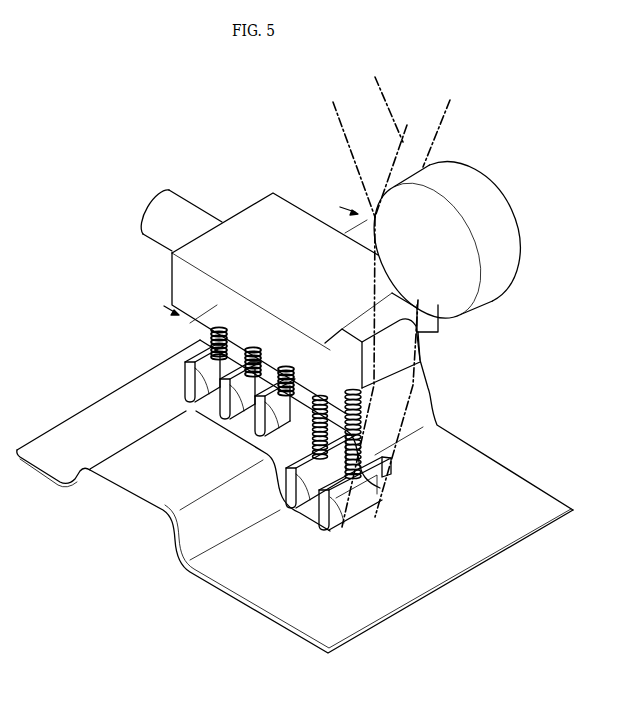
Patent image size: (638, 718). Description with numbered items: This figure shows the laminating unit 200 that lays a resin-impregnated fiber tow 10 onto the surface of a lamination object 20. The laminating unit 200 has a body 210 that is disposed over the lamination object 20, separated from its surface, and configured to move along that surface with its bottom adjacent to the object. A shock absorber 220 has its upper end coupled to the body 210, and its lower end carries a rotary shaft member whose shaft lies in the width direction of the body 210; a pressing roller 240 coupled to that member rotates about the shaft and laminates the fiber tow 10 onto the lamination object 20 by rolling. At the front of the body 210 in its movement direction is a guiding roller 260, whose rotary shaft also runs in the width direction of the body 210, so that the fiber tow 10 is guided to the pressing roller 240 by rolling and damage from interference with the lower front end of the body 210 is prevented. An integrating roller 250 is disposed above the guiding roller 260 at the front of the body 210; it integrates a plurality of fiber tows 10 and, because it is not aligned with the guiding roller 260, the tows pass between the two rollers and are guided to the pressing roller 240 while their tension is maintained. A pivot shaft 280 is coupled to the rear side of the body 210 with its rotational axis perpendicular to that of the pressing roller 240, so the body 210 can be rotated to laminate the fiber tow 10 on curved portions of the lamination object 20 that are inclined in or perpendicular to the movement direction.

The fiber tow 10 is at (412, 395).
The lamination object 20 is at (402, 587).
The laminating unit 200 is at (308, 369).
The body 210 is at (263, 200).
The shock absorber 220 is at (212, 336).
The pressing roller 240 is at (385, 507).
The integrating roller 250 is at (483, 192).
The guiding roller 260 is at (403, 337).
The pivot shaft 280 is at (162, 197).